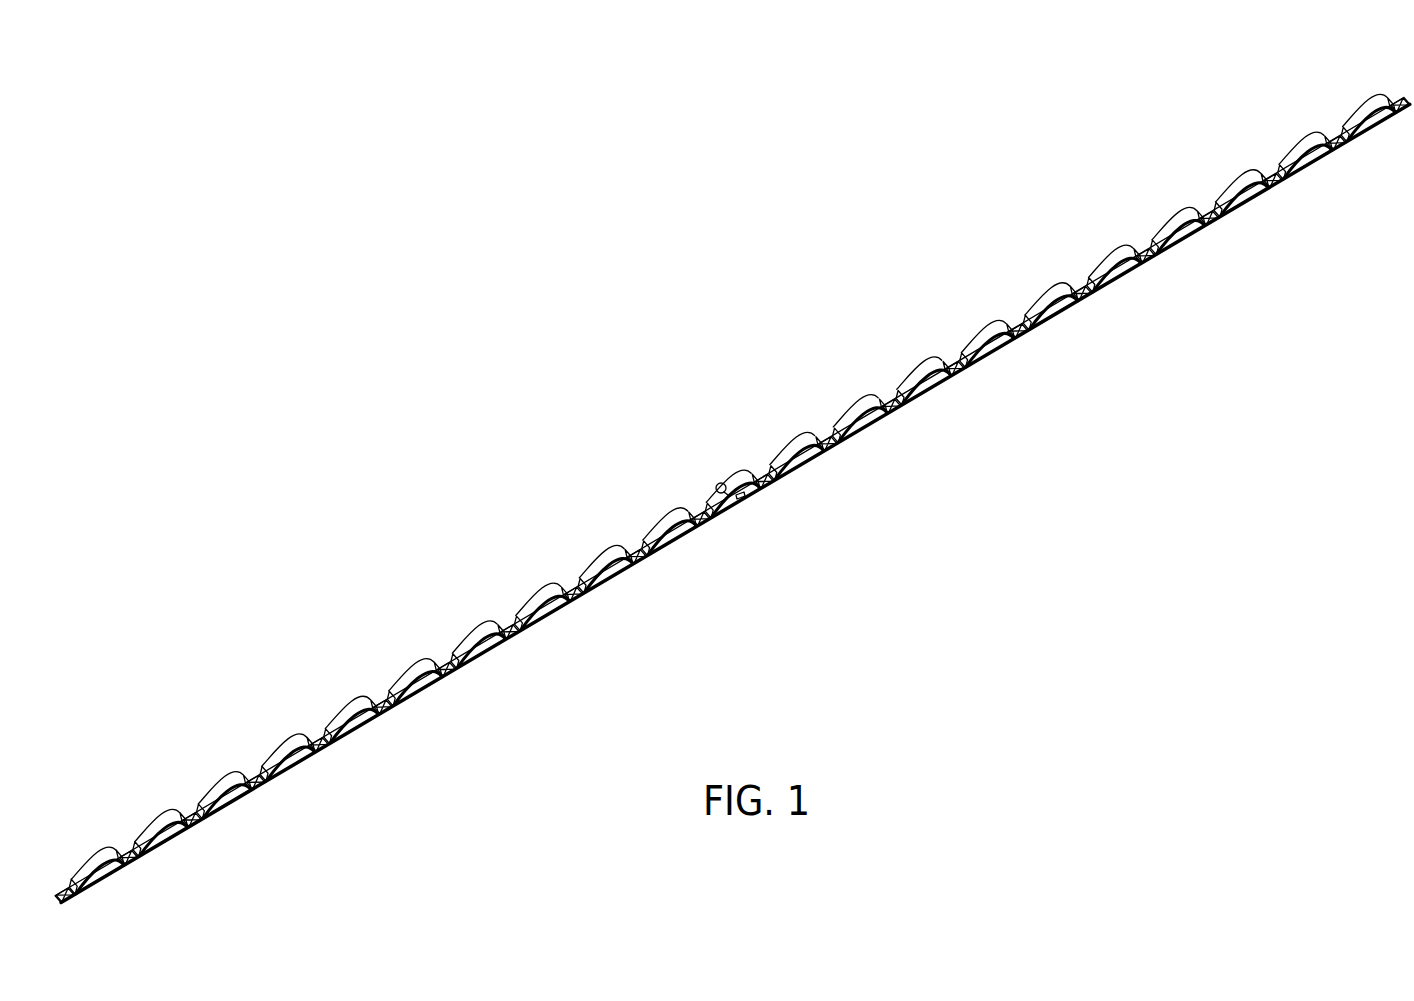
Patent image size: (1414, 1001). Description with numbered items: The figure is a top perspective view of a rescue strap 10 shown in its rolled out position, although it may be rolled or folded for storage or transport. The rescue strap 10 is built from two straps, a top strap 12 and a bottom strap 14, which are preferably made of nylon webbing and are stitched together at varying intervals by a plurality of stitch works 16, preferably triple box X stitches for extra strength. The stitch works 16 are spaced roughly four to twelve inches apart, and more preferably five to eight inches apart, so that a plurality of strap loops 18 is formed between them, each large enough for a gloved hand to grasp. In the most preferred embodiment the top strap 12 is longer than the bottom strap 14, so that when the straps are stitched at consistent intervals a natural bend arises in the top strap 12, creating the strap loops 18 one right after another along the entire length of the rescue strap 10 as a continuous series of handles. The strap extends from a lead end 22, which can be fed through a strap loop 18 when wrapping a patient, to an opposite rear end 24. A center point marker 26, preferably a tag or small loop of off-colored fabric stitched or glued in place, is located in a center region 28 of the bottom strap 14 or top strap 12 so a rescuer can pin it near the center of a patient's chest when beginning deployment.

The rescue strap 10 is at (725, 468).
The top strap 12 is at (983, 330).
The bottom strap 14 is at (1002, 357).
The stitch works 16 is at (376, 695).
The strap loop 18 is at (1049, 310).
The lead end 22 is at (60, 884).
The rear end 24 is at (1396, 96).
The center point marker 26 is at (718, 478).
The center region 28 is at (762, 516).